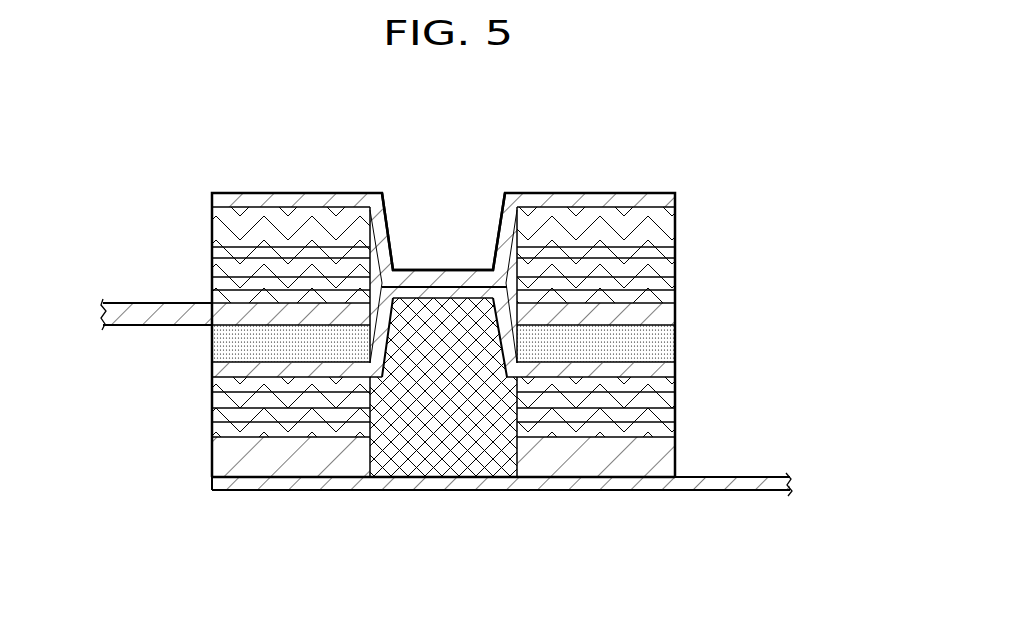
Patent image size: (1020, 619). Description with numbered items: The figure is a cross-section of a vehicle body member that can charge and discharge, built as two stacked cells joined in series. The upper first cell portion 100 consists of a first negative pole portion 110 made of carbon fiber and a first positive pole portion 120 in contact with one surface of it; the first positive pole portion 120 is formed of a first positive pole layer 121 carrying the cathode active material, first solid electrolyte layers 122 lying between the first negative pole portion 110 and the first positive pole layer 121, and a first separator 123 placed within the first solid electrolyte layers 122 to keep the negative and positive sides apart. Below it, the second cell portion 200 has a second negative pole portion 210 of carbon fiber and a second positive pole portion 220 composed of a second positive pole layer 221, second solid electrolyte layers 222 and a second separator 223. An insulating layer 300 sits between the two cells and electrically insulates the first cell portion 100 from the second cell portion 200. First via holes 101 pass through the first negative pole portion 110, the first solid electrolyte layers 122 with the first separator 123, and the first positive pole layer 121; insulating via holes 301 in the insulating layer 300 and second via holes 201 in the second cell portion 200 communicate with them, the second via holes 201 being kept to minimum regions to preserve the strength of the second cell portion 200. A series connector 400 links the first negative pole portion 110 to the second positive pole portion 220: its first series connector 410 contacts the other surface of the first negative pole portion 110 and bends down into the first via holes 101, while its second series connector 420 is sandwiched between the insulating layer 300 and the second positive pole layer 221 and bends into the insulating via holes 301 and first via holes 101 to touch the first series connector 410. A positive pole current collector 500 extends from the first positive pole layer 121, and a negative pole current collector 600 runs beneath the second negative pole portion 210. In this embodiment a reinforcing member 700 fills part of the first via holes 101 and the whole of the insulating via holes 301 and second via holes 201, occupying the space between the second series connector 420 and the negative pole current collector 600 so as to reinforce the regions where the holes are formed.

The first cell portion 100 is at (798, 195).
The first via holes 101 is at (470, 242).
The first negative pole portion 110 is at (666, 223).
The first positive pole portion 120 is at (803, 240).
The first positive pole layer 121 is at (670, 298).
The first solid electrolyte layers 122 is at (666, 252).
The first separator 123 is at (670, 268).
The second cell portion 200 is at (160, 565).
The second via holes 201 is at (390, 404).
The second negative pole portion 210 is at (243, 463).
The second positive pole portion 220 is at (83, 400).
The second positive pole layer 221 is at (220, 385).
The second solid electrolyte layers 222 is at (220, 400).
The second separator 223 is at (220, 415).
The insulating layer 300 is at (223, 342).
The insulating via holes 301 is at (460, 350).
The series connector 400 is at (492, 125).
The first series connector 410 is at (415, 274).
The second series connector 420 is at (447, 293).
The positive pole current collector 500 is at (133, 307).
The negative pole current collector 600 is at (718, 482).
The reinforcing member 700 is at (440, 457).